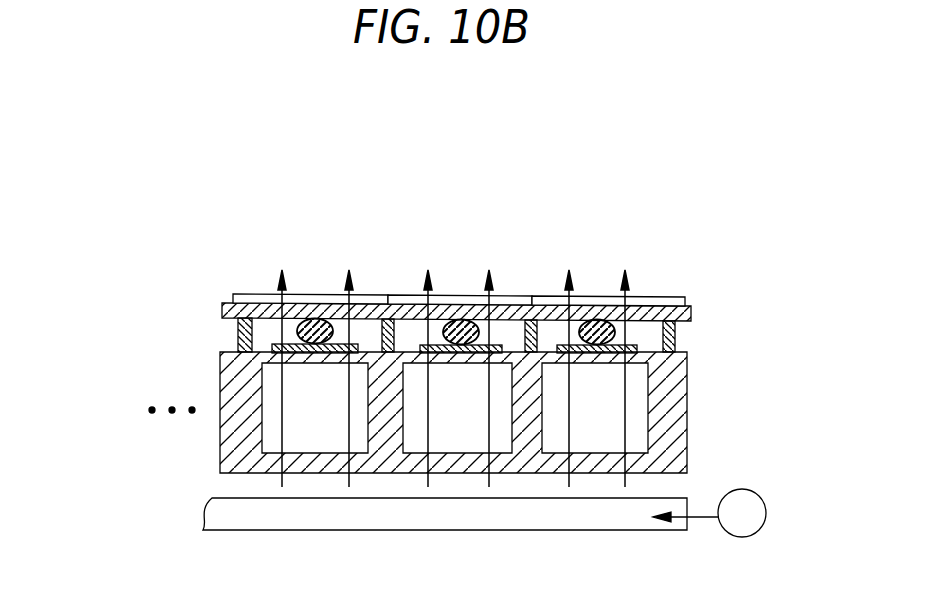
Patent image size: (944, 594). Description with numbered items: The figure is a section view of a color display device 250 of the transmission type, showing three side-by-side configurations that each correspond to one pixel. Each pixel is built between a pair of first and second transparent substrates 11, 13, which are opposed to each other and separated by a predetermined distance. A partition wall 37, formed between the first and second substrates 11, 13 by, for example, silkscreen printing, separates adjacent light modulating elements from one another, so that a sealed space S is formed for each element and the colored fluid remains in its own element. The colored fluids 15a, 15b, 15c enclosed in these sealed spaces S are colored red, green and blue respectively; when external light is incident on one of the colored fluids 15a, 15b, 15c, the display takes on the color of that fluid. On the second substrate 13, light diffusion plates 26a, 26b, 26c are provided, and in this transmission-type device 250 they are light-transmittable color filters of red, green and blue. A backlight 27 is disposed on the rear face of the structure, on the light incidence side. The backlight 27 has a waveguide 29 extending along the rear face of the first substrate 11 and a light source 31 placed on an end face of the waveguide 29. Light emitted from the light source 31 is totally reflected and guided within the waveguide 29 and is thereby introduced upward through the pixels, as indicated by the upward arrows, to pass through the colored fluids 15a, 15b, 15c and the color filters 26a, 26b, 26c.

The first transparent substrate 11 is at (221, 452).
The second transparent substrate 13 is at (225, 305).
The colored fluid (red) 15a is at (316, 319).
The colored fluid (green) 15b is at (463, 321).
The colored fluid (blue) 15c is at (592, 321).
The light diffusion plate (red color filter) 26a is at (262, 293).
The light diffusion plate (green color filter) 26b is at (400, 296).
The light diffusion plate (blue color filter) 26c is at (550, 297).
The backlight 27 is at (714, 486).
The waveguide 29 is at (273, 515).
The light source 31 is at (743, 523).
The partition wall 37 is at (676, 337).
The color display device 250 is at (608, 199).
The sealed space S is at (648, 328).